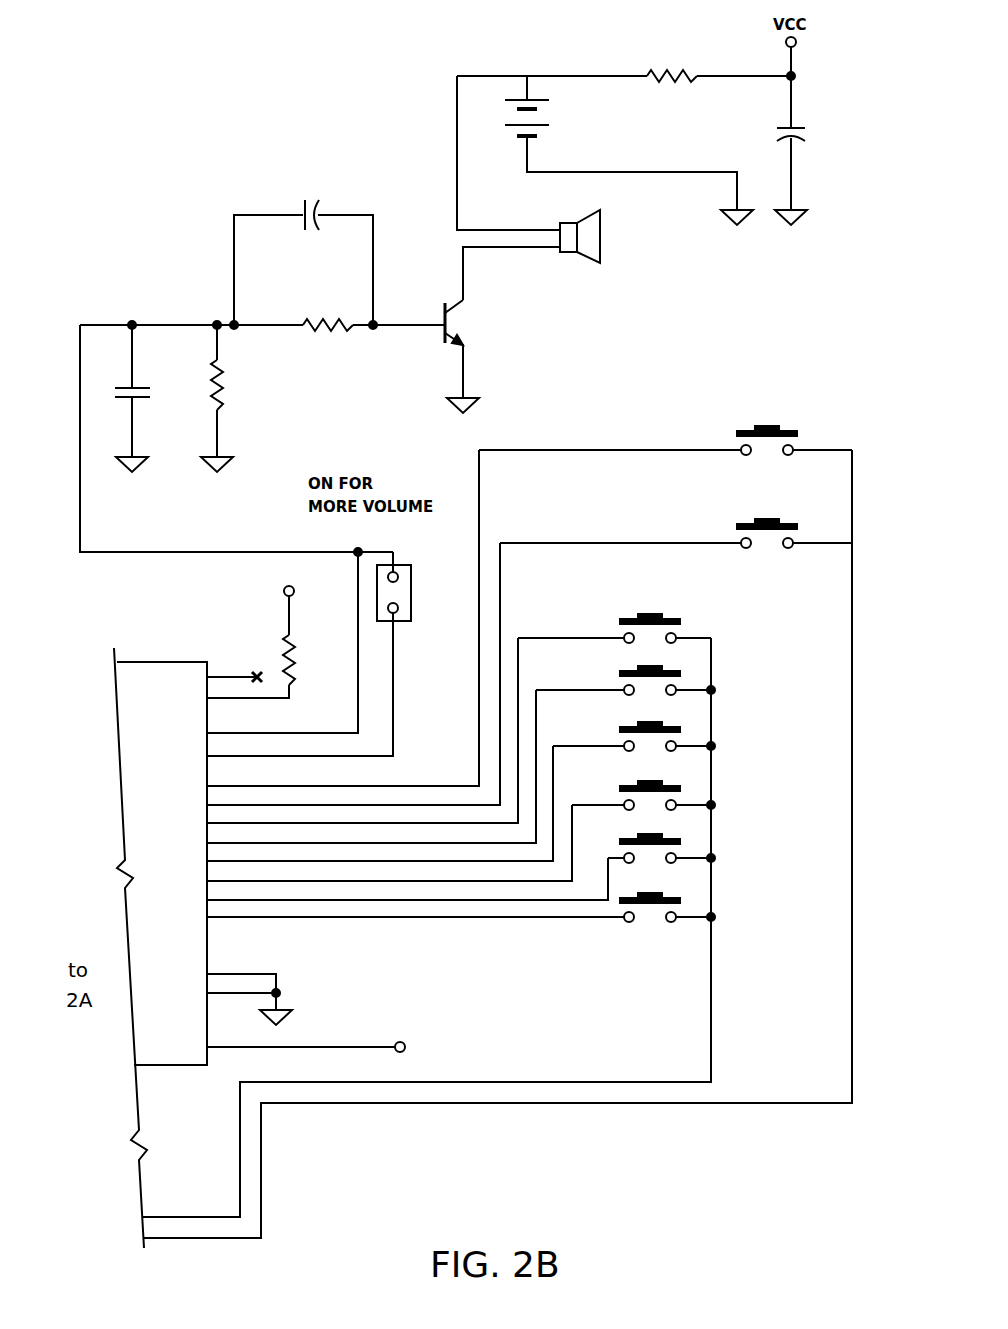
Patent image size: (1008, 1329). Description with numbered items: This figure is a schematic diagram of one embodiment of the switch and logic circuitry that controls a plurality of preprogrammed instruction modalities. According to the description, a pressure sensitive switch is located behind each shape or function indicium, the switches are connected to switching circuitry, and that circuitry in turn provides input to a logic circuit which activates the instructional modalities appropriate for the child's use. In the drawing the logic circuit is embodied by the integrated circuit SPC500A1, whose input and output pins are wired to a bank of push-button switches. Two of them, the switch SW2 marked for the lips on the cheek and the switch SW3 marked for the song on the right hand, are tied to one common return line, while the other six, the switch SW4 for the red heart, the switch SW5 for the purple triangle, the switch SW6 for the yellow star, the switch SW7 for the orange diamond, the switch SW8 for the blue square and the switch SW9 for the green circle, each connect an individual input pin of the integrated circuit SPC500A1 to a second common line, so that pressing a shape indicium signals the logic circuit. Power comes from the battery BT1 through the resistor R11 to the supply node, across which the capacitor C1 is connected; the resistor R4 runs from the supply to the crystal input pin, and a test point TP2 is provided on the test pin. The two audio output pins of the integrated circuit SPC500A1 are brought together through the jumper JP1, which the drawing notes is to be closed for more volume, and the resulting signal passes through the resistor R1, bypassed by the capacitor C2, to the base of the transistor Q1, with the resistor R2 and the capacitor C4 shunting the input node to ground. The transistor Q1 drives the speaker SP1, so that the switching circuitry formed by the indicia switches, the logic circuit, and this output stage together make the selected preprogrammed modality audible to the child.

The resistor R11 1R0 R11 is at (624, 75).
The battery 2xAA BT1 is at (629, 150).
The capacitor 100uF C1 is at (823, 150).
The speaker 8R W25 SP1 is at (607, 243).
The transistor 8050 Q1 is at (455, 350).
The resistor 270R R1 is at (226, 324).
The capacitor 0.1uF C4 is at (160, 398).
The resistor 470R R2 is at (239, 398).
The capacitor 0.1uF C2 is at (303, 247).
The jumper JP1 is at (331, 654).
The resistor 91K R4 is at (275, 632).
The sound processor IC SPC500A1 is at (203, 948).
The test point TP2 is at (342, 1030).
The lips switch SW2 is at (665, 422).
The song switch SW3 is at (676, 515).
The red heart switch SW4 is at (652, 619).
The purple triangle switch SW5 is at (675, 675).
The yellow star switch SW6 is at (676, 731).
The orange diamond switch SW7 is at (692, 788).
The blue square switch SW8 is at (703, 842).
The green circle switch SW9 is at (704, 900).